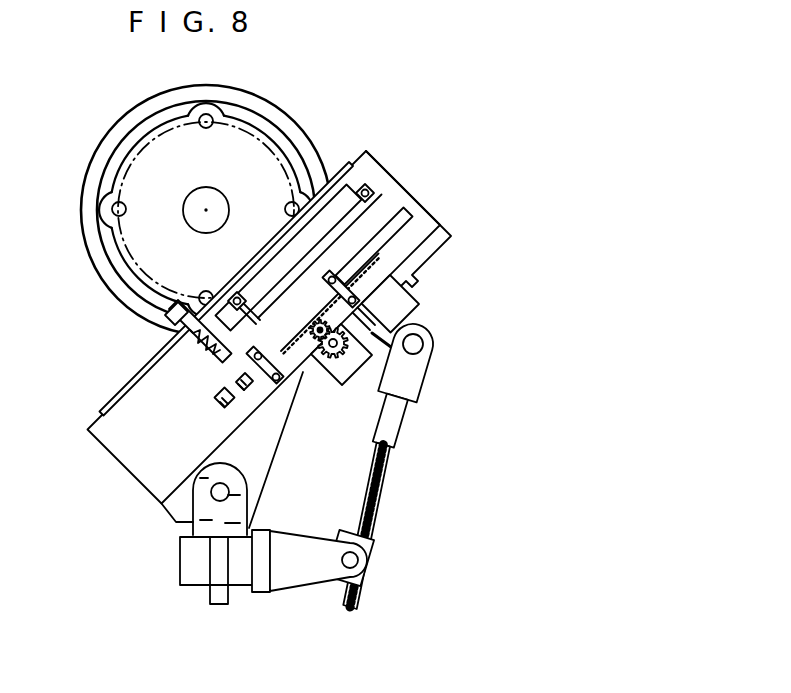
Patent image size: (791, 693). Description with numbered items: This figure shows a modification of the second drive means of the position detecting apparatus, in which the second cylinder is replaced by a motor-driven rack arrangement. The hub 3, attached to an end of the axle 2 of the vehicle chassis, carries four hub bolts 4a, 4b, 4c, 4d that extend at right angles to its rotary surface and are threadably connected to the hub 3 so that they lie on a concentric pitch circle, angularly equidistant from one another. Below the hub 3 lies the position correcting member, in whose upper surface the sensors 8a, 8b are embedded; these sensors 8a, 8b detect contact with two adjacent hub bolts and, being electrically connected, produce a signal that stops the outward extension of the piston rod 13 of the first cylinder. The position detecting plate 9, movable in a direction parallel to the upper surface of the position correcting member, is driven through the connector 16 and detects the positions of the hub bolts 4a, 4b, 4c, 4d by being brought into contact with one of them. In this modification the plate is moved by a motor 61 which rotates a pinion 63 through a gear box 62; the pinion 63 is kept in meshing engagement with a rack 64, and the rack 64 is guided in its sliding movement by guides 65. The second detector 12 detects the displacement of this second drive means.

The axle 2 is at (190, 221).
The hub 3 is at (124, 128).
The hub bolt 4a is at (202, 292).
The hub bolt 4b is at (298, 196).
The hub bolt 4c is at (212, 118).
The hub bolt 4d is at (112, 206).
The sensor 8a is at (97, 404).
The sensor 8b is at (343, 166).
The position detecting plate 9 is at (150, 318).
The second detector 12 is at (370, 170).
The piston rod 13 is at (166, 330).
The connector 16 is at (205, 378).
The motor 61 is at (423, 308).
The gear box 62 is at (356, 372).
The pinion 63 is at (323, 344).
The rack 64 is at (408, 214).
The guides 65 is at (340, 284).